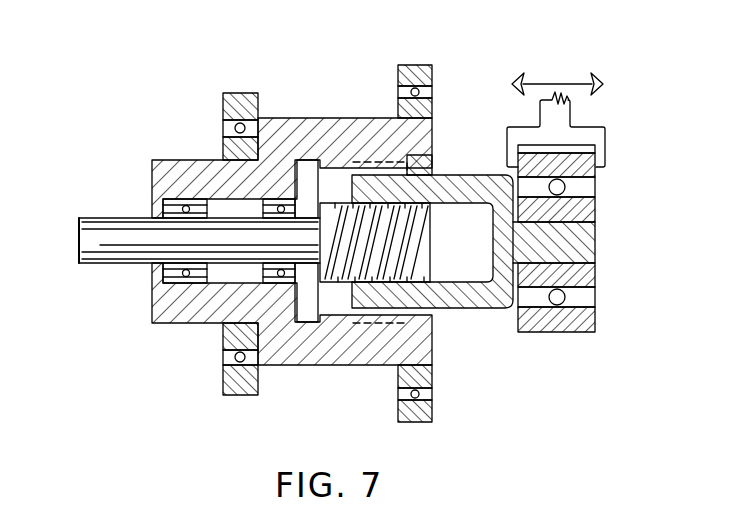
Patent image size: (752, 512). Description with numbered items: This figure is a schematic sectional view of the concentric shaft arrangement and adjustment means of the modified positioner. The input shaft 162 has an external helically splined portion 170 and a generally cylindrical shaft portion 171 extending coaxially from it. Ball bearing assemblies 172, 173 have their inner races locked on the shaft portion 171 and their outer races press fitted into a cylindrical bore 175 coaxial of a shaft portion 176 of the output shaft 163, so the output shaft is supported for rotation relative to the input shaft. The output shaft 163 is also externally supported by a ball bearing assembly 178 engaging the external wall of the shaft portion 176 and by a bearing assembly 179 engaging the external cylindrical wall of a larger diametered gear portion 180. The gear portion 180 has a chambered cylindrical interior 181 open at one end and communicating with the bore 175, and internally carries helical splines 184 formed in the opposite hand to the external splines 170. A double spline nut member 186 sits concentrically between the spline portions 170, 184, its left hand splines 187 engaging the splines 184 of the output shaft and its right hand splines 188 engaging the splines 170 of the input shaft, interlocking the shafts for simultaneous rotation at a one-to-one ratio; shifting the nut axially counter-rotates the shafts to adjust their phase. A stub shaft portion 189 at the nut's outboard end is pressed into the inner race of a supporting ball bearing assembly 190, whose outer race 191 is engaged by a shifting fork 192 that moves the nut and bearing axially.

The input shaft 162 is at (115, 263).
The output shaft 163 is at (261, 331).
The external helically splined portion 170 is at (402, 242).
The cylindrical shaft portion 171 is at (103, 218).
The ball bearing assembly 172 is at (176, 200).
The ball bearing assembly 173 is at (280, 198).
The cylindrical bore 175 is at (221, 286).
The shaft portion 176 is at (203, 160).
The ball bearing assembly 178 is at (236, 93).
The bearing assembly 179 is at (433, 66).
The gear portion 180 is at (284, 116).
The chambered cylindrical interior 181 is at (303, 322).
The helical splines 184 is at (430, 174).
The double spline nut member 186 is at (441, 298).
The left hand splines 187 is at (407, 152).
The right hand splines 188 is at (426, 282).
The stub shaft portion 189 is at (582, 245).
The supporting ball bearing assembly 190 is at (597, 188).
The outer race 191 is at (586, 318).
The shifting fork 192 is at (606, 130).